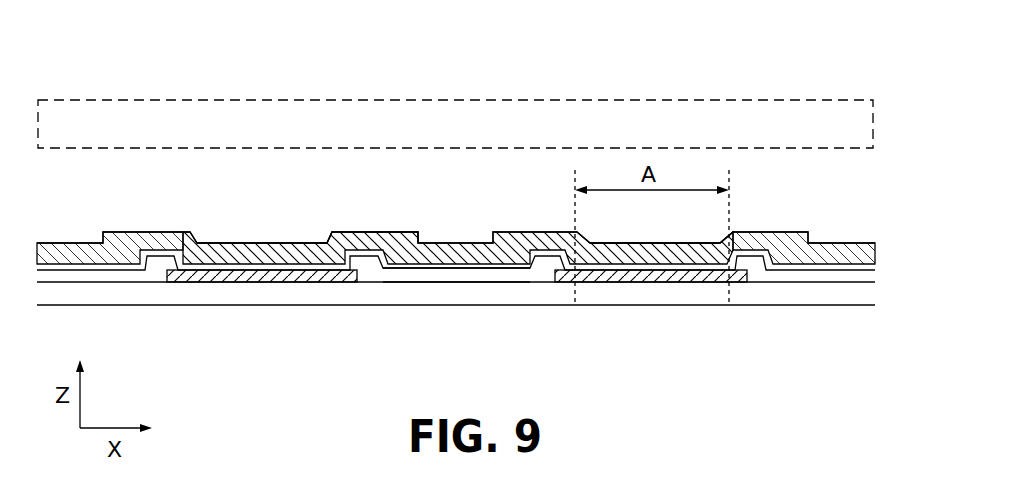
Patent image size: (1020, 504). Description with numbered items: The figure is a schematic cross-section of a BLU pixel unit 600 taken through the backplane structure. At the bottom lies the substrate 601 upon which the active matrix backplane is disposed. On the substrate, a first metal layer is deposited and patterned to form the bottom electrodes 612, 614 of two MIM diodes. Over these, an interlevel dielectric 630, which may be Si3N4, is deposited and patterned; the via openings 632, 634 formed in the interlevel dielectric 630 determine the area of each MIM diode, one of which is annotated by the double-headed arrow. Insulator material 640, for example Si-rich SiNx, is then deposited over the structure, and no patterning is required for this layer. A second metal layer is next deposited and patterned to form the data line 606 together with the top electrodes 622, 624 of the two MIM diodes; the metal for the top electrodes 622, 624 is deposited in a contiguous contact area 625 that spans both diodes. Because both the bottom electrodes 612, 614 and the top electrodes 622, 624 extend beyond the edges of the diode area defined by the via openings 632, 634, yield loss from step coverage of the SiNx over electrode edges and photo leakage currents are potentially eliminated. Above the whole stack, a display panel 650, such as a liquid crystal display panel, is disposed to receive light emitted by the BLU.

The BLU pixel unit 600 is at (820, 189).
The substrate 601 is at (458, 305).
The data line 606 is at (133, 243).
The bottom electrode 612 is at (247, 280).
The bottom electrode 614 is at (665, 278).
The top electrode 622 is at (288, 245).
The top electrode 624 is at (700, 245).
The contact area 625 is at (388, 230).
The interlevel dielectric 630 is at (115, 278).
The via opening 632 is at (250, 233).
The via opening 634 is at (672, 233).
The insulator material 640 is at (443, 265).
The display panel 650 is at (637, 100).